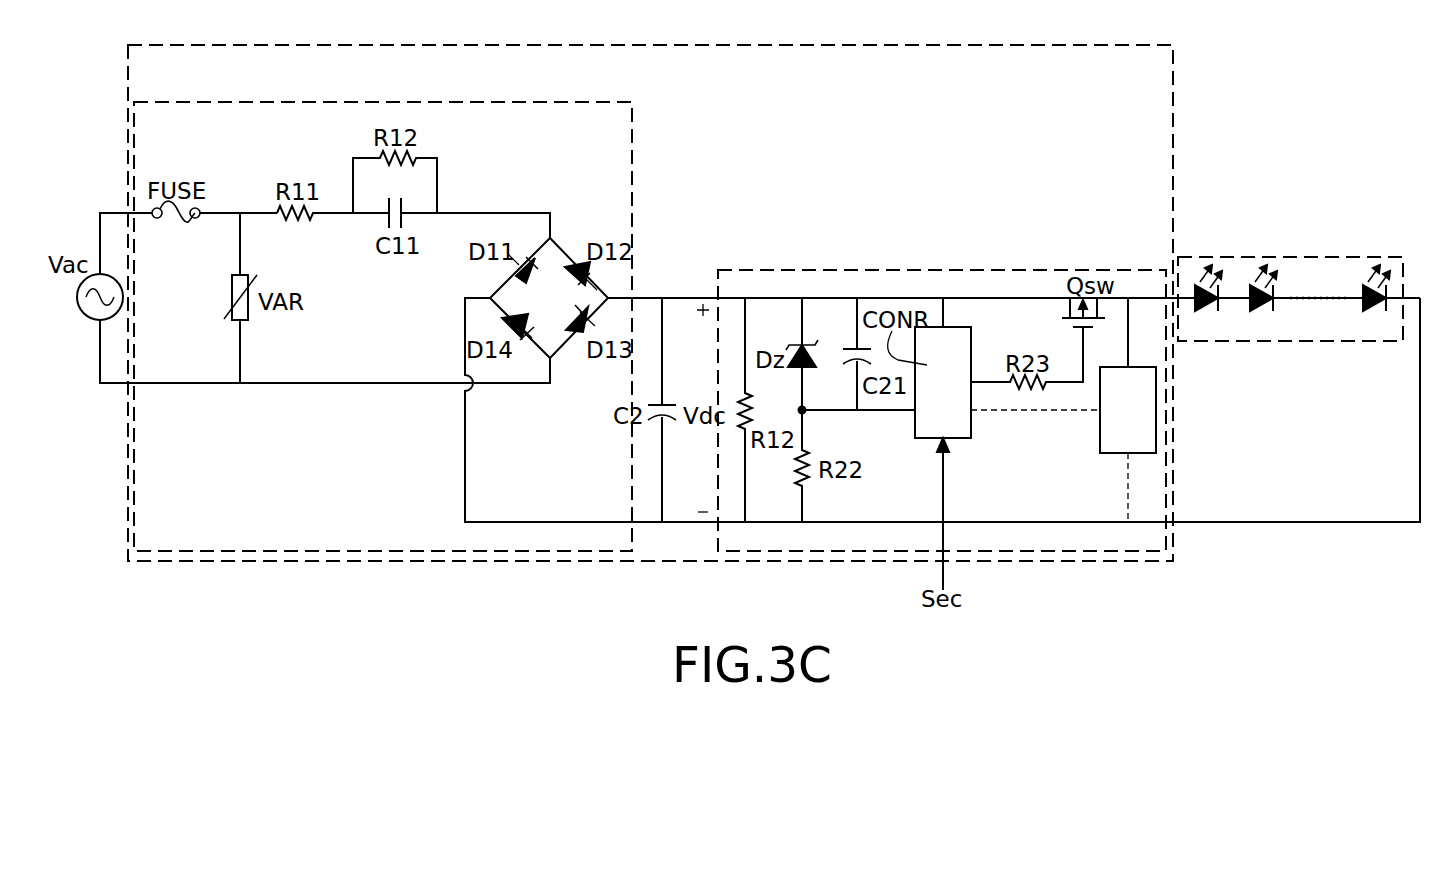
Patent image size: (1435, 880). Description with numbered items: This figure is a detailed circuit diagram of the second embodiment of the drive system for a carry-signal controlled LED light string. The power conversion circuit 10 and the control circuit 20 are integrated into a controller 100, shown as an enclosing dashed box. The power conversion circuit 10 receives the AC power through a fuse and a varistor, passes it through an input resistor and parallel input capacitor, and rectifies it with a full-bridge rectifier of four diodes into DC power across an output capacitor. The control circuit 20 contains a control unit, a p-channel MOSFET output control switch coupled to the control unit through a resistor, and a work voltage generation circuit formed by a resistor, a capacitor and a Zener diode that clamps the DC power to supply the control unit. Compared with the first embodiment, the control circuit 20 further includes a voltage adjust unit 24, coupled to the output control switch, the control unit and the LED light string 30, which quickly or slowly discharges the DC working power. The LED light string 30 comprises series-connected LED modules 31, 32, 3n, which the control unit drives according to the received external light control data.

The controller 100 is at (652, 52).
The power conversion circuit 10 is at (380, 107).
The control circuit 20 is at (900, 276).
The voltage adjust unit 24 is at (1100, 428).
The LED light string 30 is at (1290, 263).
The LED module 31 is at (1225, 305).
The LED module 32 is at (1280, 305).
The LED module 3n is at (1393, 305).